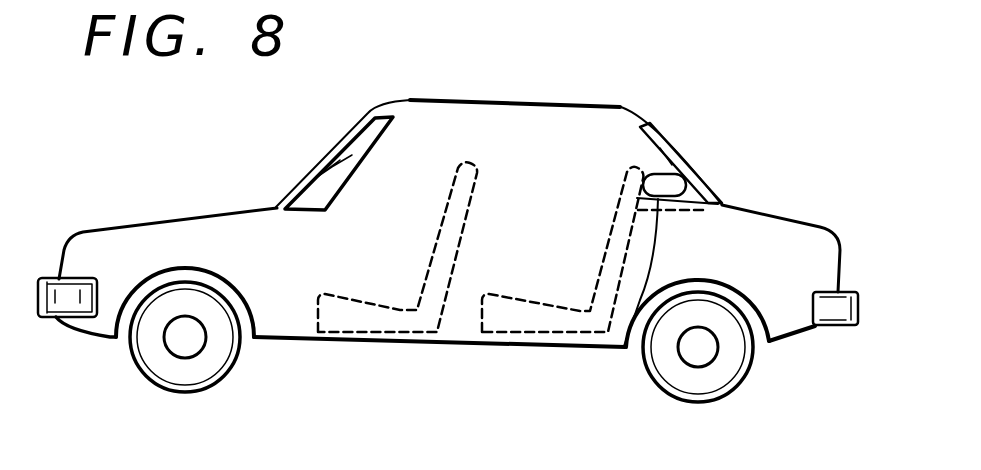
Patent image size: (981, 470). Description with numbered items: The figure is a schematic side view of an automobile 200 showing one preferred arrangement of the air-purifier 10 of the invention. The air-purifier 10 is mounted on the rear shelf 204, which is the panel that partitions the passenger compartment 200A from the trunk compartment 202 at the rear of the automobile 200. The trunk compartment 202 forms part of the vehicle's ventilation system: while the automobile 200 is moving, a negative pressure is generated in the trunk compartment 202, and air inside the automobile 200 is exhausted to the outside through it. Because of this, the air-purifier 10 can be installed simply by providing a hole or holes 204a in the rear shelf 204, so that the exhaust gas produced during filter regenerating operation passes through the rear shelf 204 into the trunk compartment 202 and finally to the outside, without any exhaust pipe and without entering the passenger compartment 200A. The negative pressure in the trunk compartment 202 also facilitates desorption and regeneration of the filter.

The automobile 200 is at (472, 102).
The passenger compartment 200A is at (566, 106).
The air-purifier 10 is at (663, 172).
The rear shelf 204 is at (724, 201).
The hole 204a is at (605, 350).
The trunk compartment 202 is at (775, 237).